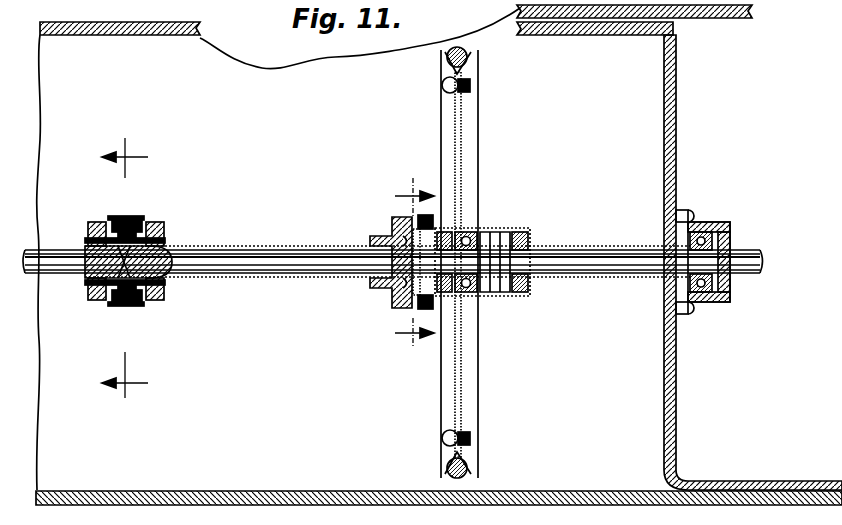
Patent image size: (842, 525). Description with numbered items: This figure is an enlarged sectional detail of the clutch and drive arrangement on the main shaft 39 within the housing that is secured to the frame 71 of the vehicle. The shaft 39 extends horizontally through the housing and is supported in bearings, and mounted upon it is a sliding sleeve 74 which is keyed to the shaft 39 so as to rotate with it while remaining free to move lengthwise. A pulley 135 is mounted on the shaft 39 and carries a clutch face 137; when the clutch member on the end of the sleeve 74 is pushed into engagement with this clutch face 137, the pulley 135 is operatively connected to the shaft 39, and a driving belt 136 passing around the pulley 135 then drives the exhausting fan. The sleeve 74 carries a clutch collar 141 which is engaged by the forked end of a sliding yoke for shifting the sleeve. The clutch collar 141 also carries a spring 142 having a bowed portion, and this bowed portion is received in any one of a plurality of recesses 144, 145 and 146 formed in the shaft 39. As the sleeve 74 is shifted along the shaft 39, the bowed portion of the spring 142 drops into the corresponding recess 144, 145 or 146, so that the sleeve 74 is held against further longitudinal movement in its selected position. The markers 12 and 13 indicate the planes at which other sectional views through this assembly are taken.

The section line 12- 12 is at (403, 265).
The section line 13- 13 is at (138, 268).
The shaft 39 is at (253, 274).
The frame 71 is at (394, 300).
The sliding sleeve 74 is at (254, 247).
The pulley 135 is at (463, 160).
The driving belt 136 is at (467, 54).
The clutch face 137 is at (428, 309).
The clutch collar 141 is at (160, 226).
The spring 142 is at (140, 300).
The recess 144 is at (168, 258).
The recess 145 is at (140, 232).
The recess 146 is at (96, 292).